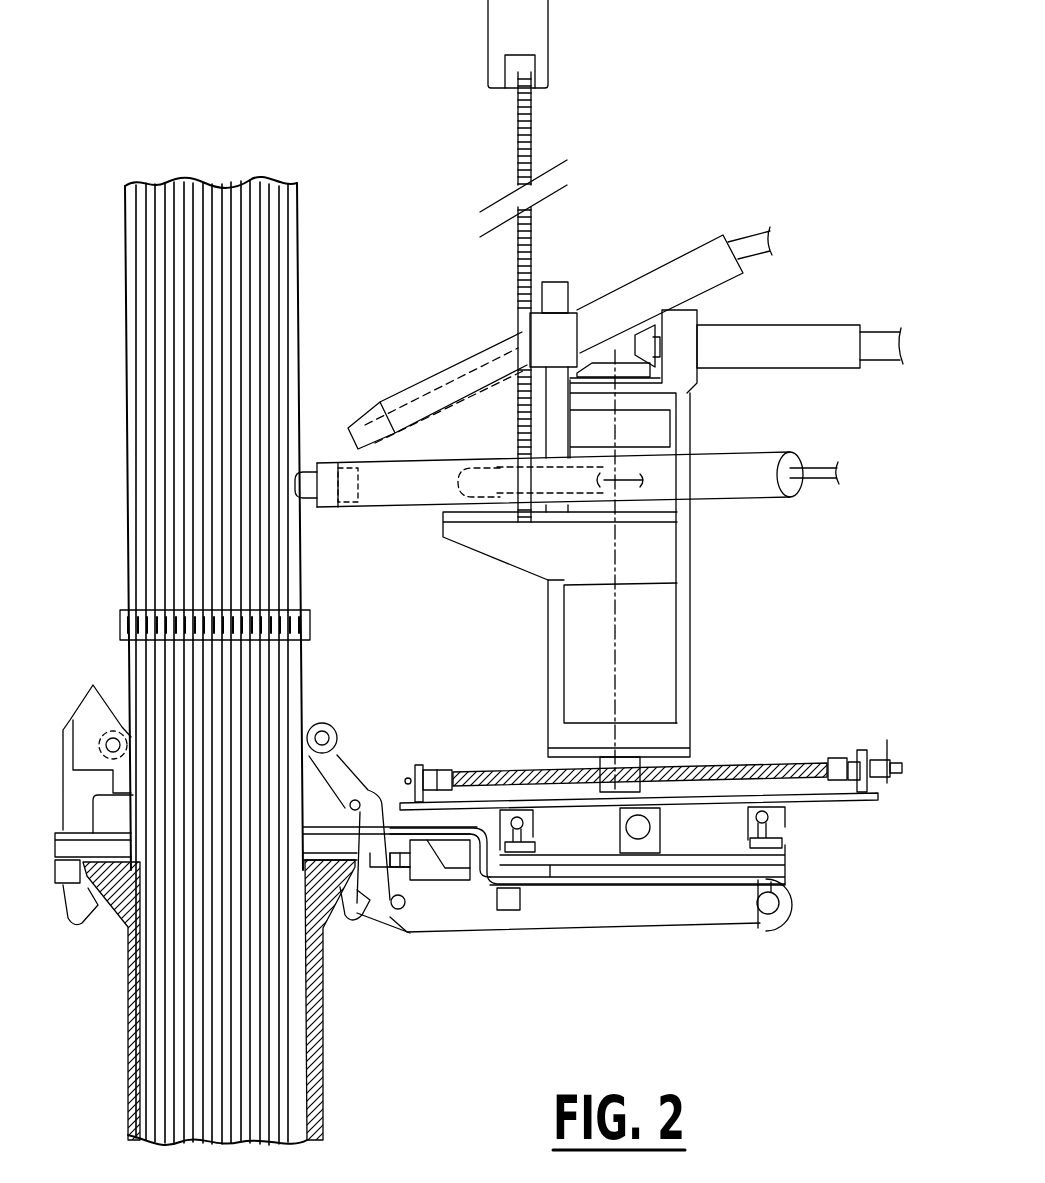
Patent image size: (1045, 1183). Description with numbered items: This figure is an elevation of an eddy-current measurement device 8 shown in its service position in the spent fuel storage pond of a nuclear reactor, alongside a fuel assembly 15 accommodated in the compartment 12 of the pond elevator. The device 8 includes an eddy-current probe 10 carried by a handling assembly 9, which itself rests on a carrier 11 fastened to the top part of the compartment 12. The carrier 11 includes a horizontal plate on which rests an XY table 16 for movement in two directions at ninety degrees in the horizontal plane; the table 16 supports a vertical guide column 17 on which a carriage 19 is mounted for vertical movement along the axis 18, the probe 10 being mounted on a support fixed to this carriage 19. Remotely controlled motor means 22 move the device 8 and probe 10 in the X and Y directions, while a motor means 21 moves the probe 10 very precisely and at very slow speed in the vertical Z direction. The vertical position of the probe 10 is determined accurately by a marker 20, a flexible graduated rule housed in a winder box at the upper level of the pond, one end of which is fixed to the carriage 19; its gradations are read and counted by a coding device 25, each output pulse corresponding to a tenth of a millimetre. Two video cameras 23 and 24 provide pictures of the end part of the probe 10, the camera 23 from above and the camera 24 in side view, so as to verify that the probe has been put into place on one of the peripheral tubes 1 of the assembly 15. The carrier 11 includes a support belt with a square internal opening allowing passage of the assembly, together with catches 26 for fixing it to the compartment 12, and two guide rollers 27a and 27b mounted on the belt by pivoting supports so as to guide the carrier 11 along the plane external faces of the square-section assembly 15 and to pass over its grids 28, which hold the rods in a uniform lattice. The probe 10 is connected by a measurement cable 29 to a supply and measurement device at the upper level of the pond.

The peripheral tube 1 is at (300, 347).
The measurement device 8 is at (733, 183).
The handling assembly 9 is at (696, 650).
The eddy-current probe 10 is at (305, 492).
The carrier 11 is at (641, 912).
The compartment of the elevator 12 is at (315, 1063).
The fuel assembly 15 is at (260, 248).
The table 16 is at (822, 805).
The vertical guide column 17 is at (555, 668).
The axis 18 is at (618, 598).
The carriage 19 is at (507, 547).
The marker 20 is at (535, 163).
The motor means 21 is at (800, 330).
The motor means 22 is at (668, 822).
The video camera 23 is at (450, 390).
The video camera 24 is at (755, 463).
The coding device 25 is at (523, 62).
The catches 26 is at (82, 910).
The guide roller 27a is at (127, 733).
The guide roller 27b is at (330, 723).
The grids 28 is at (312, 622).
The measurement cable 29 is at (815, 478).